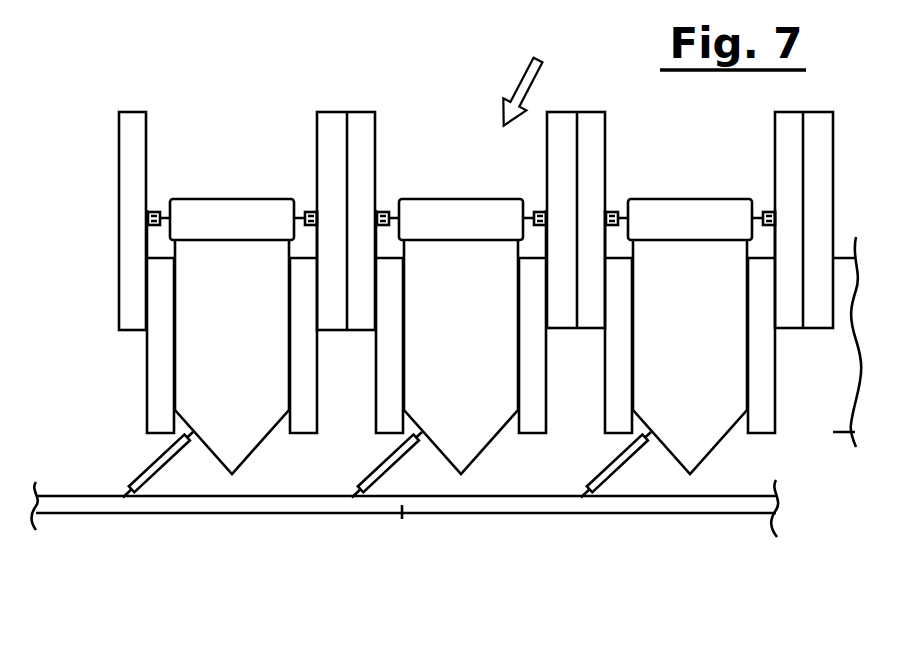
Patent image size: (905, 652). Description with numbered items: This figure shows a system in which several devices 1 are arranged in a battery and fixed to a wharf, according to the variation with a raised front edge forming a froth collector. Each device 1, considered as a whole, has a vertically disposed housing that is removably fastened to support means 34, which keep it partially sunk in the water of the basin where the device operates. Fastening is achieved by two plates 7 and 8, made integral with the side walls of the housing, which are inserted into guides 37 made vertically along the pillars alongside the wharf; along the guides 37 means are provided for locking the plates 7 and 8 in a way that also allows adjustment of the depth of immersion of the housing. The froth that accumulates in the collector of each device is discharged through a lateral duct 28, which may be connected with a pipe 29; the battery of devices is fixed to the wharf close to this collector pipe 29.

The device 1 is at (132, 398).
The plate 7 is at (158, 212).
The plate 8 is at (310, 212).
The guide 37 is at (389, 210).
The support means 34 is at (532, 80).
The lateral duct 28 is at (191, 434).
The pipe 29 is at (402, 506).